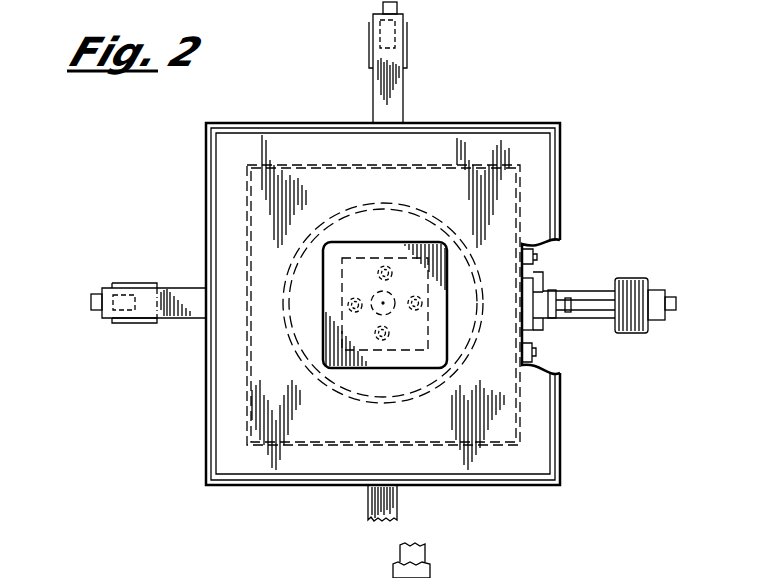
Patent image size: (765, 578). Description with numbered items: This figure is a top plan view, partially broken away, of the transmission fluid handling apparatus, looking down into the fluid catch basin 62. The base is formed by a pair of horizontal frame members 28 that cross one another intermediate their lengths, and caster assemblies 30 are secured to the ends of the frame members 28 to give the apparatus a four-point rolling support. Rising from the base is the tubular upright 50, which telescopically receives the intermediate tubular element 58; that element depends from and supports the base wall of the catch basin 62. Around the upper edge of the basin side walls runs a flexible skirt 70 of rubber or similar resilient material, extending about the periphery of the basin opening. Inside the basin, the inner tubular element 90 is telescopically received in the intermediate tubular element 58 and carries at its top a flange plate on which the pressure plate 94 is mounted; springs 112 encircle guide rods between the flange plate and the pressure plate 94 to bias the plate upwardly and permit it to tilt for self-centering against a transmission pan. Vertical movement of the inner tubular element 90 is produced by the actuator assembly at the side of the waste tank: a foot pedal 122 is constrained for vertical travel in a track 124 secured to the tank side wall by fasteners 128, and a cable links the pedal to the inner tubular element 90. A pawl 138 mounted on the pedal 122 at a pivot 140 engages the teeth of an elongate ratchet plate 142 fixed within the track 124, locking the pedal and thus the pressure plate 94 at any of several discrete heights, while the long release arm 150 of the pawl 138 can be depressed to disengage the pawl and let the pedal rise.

The horizontal frame members 28 is at (404, 83).
The caster assemblies 30 is at (402, 7).
The tubular upright 50 is at (435, 570).
The intermediate tubular element 58 is at (397, 566).
The fluid catch basin 62 is at (216, 432).
The flexible skirt 70 is at (273, 487).
The inner tubular element 90 is at (425, 550).
The pressure plate 94 is at (419, 243).
The springs 112 is at (378, 268).
The foot pedal 122 is at (636, 279).
The track 124 is at (535, 345).
The fasteners 128 is at (537, 257).
The pawl 138 is at (542, 322).
The pivot 140 is at (547, 292).
The ratchet plate 142 is at (518, 294).
The release arm 150 is at (597, 320).